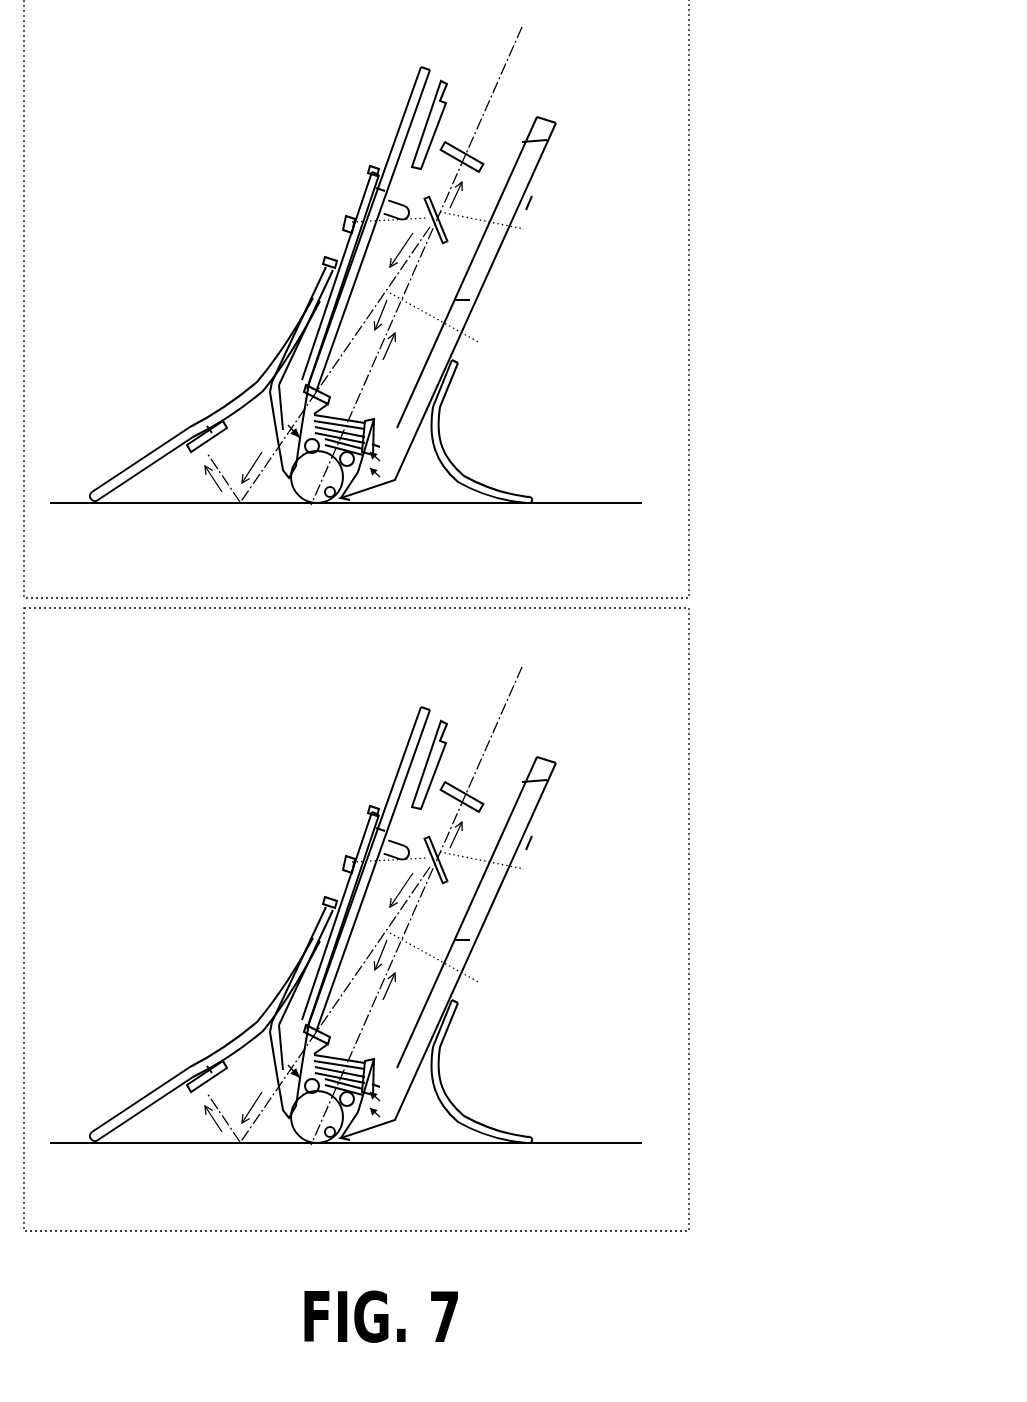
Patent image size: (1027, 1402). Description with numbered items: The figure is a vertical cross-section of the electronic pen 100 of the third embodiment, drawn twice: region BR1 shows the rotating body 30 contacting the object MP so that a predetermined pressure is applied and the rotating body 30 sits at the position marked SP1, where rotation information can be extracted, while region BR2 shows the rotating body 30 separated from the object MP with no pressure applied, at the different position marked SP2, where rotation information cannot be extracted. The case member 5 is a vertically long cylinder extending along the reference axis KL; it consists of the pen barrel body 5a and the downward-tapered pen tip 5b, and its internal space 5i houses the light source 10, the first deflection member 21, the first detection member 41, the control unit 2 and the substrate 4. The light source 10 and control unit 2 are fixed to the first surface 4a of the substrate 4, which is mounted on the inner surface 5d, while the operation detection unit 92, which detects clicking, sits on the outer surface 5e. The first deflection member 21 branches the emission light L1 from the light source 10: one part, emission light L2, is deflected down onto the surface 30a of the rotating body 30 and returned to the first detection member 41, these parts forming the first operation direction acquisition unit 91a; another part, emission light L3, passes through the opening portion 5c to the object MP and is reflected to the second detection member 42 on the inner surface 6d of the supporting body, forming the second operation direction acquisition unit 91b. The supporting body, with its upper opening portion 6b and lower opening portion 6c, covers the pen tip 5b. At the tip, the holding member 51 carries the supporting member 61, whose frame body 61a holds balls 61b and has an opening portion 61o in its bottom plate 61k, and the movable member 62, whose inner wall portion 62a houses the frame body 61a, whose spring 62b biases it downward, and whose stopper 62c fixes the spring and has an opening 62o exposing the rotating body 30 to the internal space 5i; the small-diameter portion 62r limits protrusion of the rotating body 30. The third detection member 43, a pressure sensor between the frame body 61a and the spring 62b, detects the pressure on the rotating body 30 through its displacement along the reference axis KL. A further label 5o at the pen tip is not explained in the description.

The control unit 2 is at (422, 125).
The substrate 4 is at (340, 277).
The first surface 4a is at (335, 328).
The case member 5 is at (575, 310).
The pen barrel body 5a is at (373, 168).
The pen tip 5b is at (382, 462).
The opening portion 5c is at (277, 440).
The inner surface 5d is at (454, 300).
The outer surface 5e is at (392, 167).
The internal space 5i is at (522, 142).
The carriage outer roller 5o is at (333, 498).
The upper opening portion 6b is at (458, 363).
The lower opening portion 6c is at (482, 502).
The inner surface 6d is at (136, 482).
The light source 10 is at (376, 188).
The first deflection member 21 is at (447, 236).
The rotating body 30 is at (325, 508).
The surface 30a is at (300, 500).
The first detection member 41 is at (478, 160).
The second detection member 42 is at (188, 446).
The third detection member 43 is at (380, 447).
The holding member 51 is at (388, 480).
The supporting member 61 is at (313, 454).
The frame body 61a is at (380, 473).
The balls 61b is at (293, 443).
The bottom plate 61k is at (283, 440).
The opening portion 61o is at (323, 430).
The movable member 62 is at (387, 465).
The inner wall portion 62a is at (380, 437).
The spring 62b is at (388, 432).
The stopper 62c is at (396, 420).
The opening 62o is at (368, 418).
The small-diameter portion 62r is at (349, 468).
The first operation direction acquisition unit 91a is at (535, 212).
The second operation direction acquisition unit 91b is at (201, 420).
The operation detection unit 92 is at (386, 207).
The electronic pen 100 is at (571, 112).
The reference axis KL is at (490, 86).
The emission light L1 is at (371, 224).
The emission light L2 is at (470, 283).
The emission light L3 is at (330, 350).
The object MP is at (548, 503).
The space 1 SP1 is at (620, 385).
The space 2 SP2 is at (571, 1036).
The region BR1 is at (689, 68).
The region BR2 is at (689, 706).